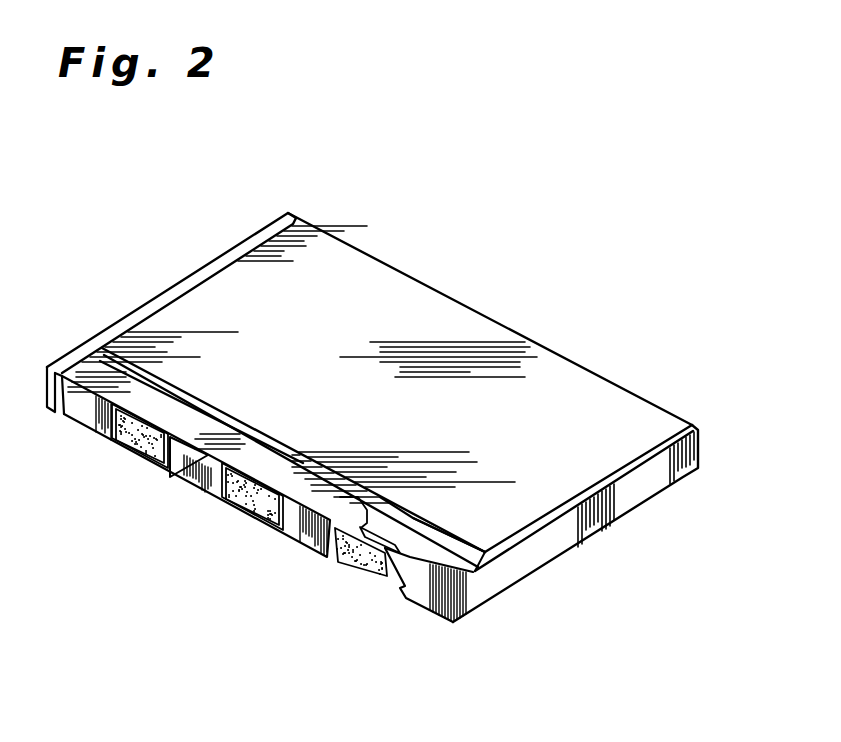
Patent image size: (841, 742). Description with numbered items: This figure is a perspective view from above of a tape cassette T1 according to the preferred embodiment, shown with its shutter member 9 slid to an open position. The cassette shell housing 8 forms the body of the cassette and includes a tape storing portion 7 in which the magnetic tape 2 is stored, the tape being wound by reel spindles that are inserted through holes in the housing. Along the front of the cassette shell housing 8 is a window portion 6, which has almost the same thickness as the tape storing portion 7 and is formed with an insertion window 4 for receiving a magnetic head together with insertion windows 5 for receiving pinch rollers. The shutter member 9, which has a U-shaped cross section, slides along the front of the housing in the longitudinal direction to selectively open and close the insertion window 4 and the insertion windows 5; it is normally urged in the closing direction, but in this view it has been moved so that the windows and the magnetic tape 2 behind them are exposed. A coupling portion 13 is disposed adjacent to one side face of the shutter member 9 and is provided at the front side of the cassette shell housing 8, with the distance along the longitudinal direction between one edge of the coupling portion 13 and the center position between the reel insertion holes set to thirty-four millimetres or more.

The tape cassette T1 is at (442, 257).
The tape storing portion 7 is at (438, 418).
The cassette shell housing 8 is at (538, 547).
The insertion window 4 is at (243, 512).
The insertion windows 5 is at (147, 452).
The shutter member 9 is at (207, 455).
The window portion 6 is at (355, 530).
The magnetic tape 2 is at (362, 543).
The coupling portion 13 is at (537, 547).